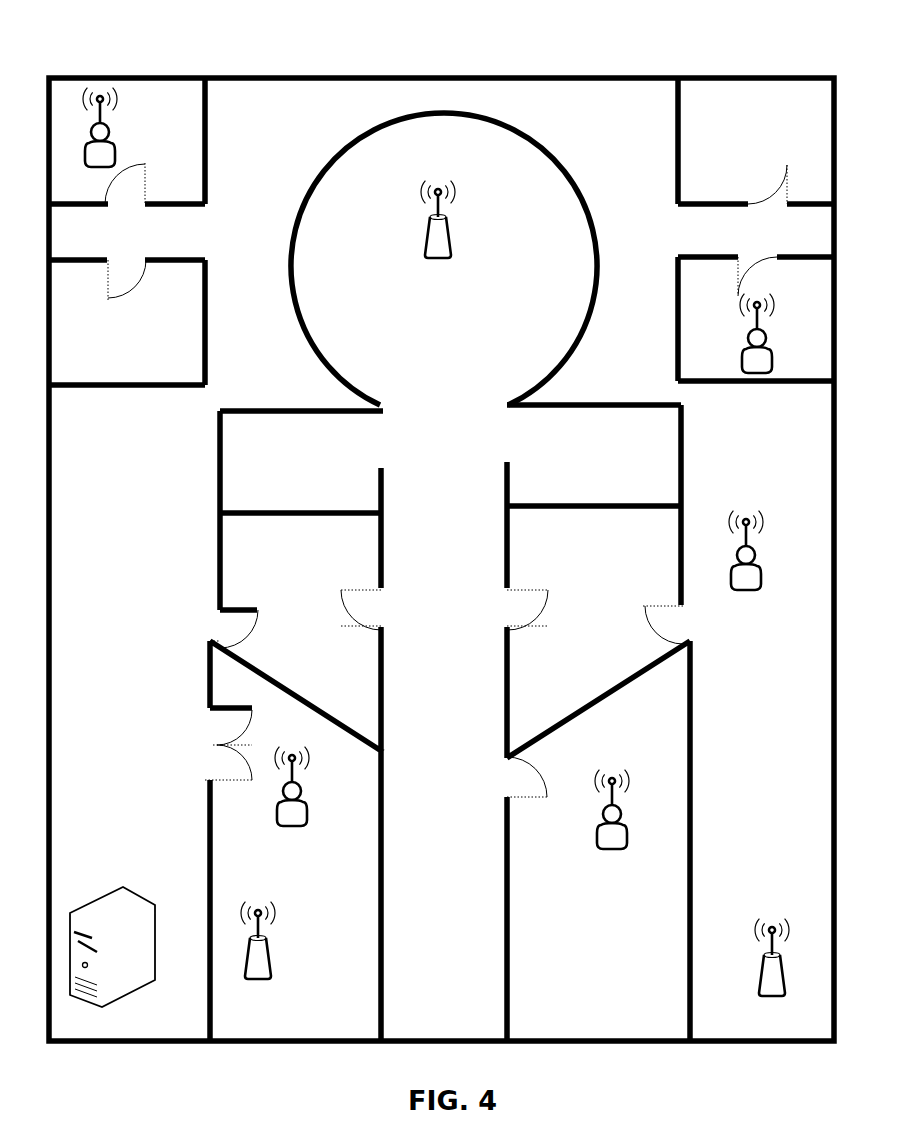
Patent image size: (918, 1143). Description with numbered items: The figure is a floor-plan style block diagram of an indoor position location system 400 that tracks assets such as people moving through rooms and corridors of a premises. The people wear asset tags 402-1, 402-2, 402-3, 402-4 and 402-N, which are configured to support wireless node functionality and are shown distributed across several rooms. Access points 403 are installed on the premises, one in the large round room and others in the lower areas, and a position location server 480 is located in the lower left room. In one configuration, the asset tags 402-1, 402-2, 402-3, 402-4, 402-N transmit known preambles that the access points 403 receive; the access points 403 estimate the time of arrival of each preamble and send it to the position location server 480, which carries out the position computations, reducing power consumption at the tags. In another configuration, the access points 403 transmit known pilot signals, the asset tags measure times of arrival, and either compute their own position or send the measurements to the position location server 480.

The indoor position location system 400 is at (508, 37).
The asset tag 402-1 is at (113, 151).
The asset tag 402-2 is at (770, 357).
The asset tag 402-3 is at (760, 572).
The asset tag 402-4 is at (626, 835).
The asset tag 402-N is at (306, 808).
The access point 403 is at (450, 240).
The position location server 480 is at (138, 893).